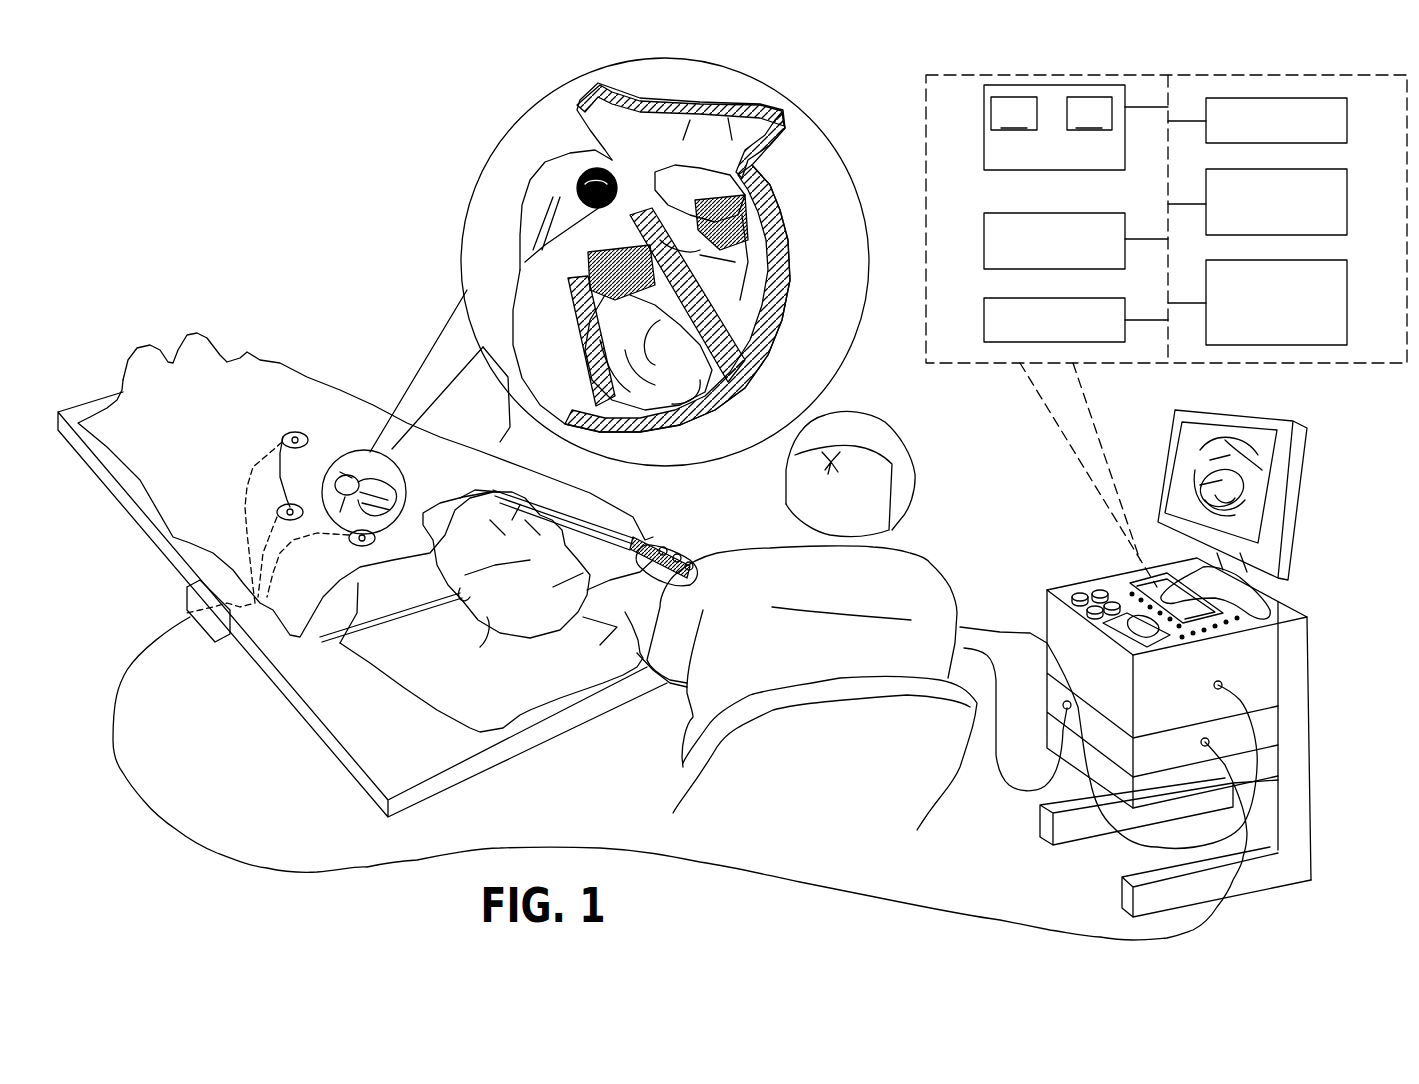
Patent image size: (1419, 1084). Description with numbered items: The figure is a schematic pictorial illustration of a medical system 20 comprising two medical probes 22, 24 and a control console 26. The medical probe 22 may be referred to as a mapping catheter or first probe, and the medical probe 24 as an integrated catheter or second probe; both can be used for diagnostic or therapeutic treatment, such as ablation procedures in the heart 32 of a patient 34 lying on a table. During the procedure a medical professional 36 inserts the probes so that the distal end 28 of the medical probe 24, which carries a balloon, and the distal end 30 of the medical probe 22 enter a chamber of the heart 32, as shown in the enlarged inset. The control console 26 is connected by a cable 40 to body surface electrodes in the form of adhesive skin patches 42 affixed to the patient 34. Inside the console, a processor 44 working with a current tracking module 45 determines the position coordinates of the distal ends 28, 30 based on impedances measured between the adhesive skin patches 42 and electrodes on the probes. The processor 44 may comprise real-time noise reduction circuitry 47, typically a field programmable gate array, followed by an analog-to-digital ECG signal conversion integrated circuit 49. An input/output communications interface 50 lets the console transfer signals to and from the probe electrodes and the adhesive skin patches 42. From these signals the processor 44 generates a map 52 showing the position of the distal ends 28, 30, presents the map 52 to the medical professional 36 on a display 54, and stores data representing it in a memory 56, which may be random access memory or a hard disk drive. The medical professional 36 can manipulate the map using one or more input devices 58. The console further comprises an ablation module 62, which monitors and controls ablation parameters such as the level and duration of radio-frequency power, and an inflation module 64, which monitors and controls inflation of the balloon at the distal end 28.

The medical system 20 is at (847, 395).
The medical probe 22 is at (613, 523).
The medical probe 24 is at (587, 522).
The control console 26 is at (1287, 612).
The distal end 28 is at (620, 168).
The distal end 30 is at (535, 205).
The heart 32 is at (784, 243).
The patient 34 is at (467, 623).
The medical professional 36 is at (919, 575).
The cable 40 is at (556, 845).
The adhesive skin patches 42 is at (284, 438).
The processor 44 is at (984, 143).
The current tracking module 45 is at (1347, 305).
The real-time noise reduction circuitry 47 is at (1014, 113).
The analog-to-digital ECG signal conversion integrated circuit 49 is at (1089, 113).
The input/output communications interface 50 is at (1347, 120).
The map 52 is at (1263, 427).
The display 54 is at (1290, 480).
The memory 56 is at (984, 320).
The input devices 58 is at (1110, 577).
The ablation module 62 is at (1347, 192).
The inflation module 64 is at (984, 237).